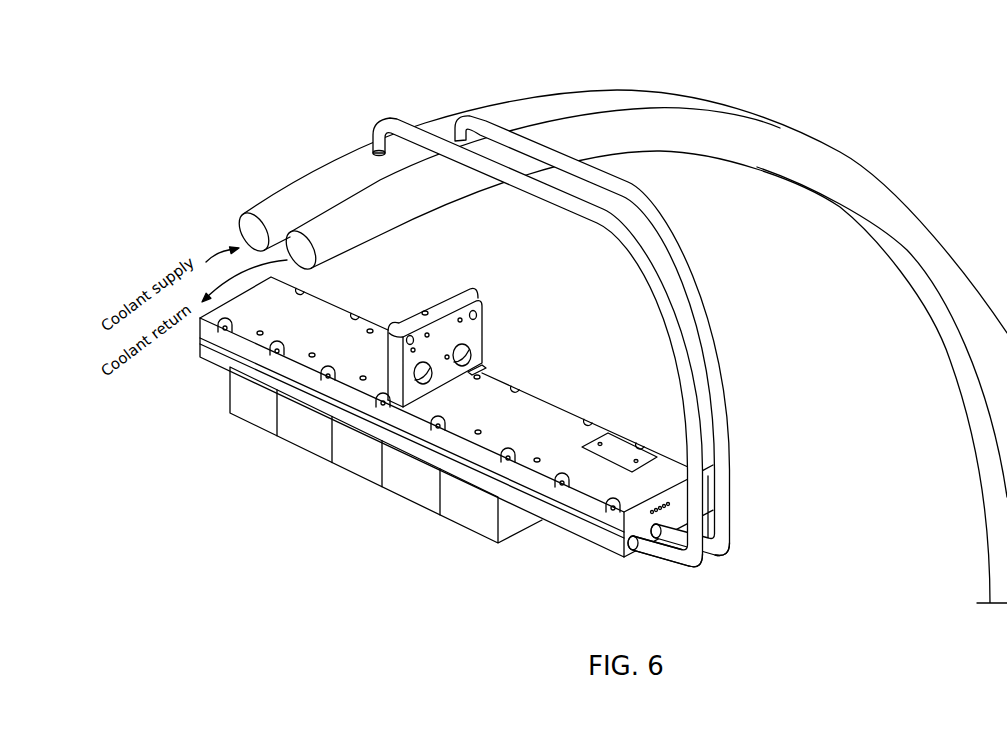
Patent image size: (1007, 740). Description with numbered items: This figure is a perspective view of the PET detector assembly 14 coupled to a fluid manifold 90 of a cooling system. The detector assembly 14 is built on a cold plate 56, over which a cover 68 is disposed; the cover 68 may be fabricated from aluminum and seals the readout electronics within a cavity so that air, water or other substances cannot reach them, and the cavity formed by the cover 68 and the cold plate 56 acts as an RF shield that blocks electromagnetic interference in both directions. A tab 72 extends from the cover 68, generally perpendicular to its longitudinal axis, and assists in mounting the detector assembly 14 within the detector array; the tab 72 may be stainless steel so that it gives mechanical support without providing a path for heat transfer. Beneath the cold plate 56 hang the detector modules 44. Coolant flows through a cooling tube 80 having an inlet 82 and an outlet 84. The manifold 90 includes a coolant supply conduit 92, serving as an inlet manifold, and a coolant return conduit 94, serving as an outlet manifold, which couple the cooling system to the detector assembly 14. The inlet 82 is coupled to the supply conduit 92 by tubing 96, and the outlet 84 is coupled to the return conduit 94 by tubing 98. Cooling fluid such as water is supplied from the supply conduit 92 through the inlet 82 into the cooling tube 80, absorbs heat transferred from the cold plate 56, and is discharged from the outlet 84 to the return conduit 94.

The PET detector assembly 14 is at (383, 507).
The laser diode modules 44 is at (298, 438).
The cold plate 56 is at (604, 542).
The cover 68 is at (560, 412).
The tab 72 is at (480, 340).
The cooling tube 80 is at (665, 558).
The inlet 82 is at (700, 571).
The outlet 84 is at (727, 556).
The fluid manifold 90 is at (664, 72).
The coolant supply conduit 92 is at (527, 100).
The coolant return conduit 94 is at (650, 137).
The tubing 96 is at (598, 218).
The tubing 98 is at (703, 262).